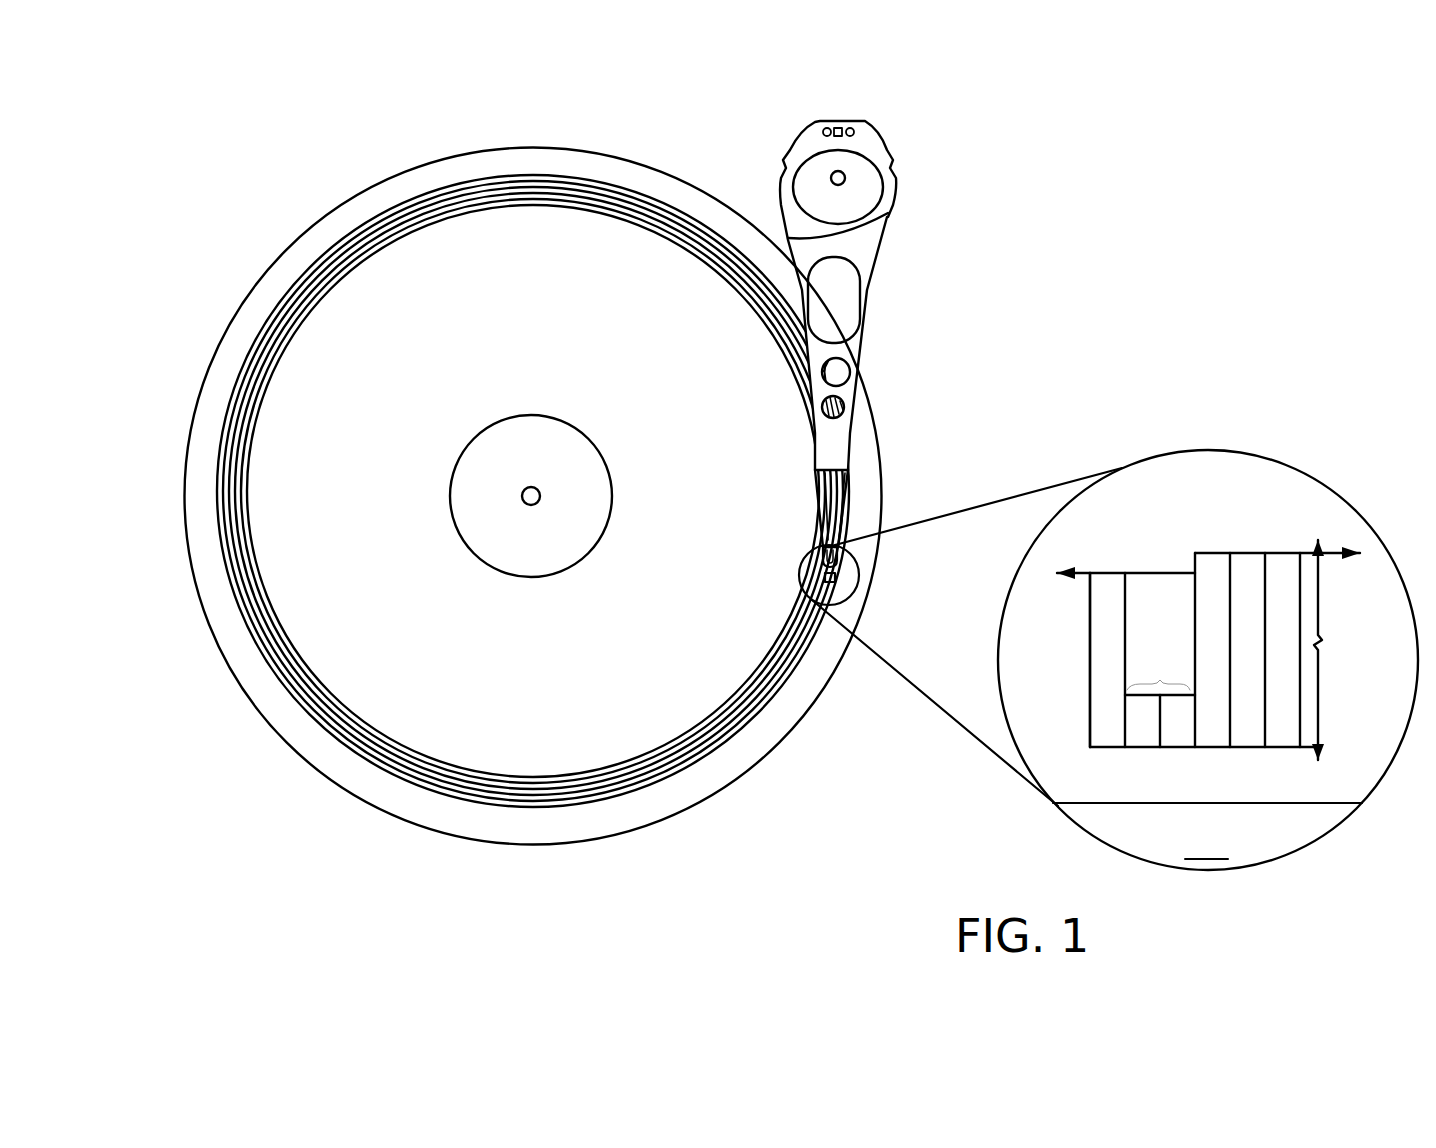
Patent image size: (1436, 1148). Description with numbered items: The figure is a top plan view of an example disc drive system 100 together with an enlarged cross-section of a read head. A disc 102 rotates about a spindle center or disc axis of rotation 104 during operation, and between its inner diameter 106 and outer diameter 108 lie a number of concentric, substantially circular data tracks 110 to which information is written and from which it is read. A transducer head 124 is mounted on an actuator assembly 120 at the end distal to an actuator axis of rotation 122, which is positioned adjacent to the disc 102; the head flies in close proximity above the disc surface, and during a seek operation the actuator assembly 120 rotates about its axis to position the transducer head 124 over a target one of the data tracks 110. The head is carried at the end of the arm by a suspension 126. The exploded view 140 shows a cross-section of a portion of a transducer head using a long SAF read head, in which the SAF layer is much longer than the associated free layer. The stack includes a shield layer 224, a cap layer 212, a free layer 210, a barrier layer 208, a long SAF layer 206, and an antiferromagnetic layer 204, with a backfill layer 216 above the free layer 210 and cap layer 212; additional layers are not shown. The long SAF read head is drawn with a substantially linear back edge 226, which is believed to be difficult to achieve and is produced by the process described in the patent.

The disc drive system 100 is at (260, 122).
The disc 102 is at (607, 150).
The disc axis of rotation 104 is at (531, 496).
The inner diameter 106 is at (495, 420).
The outer diameter 108 is at (400, 197).
The data tracks 110 is at (260, 656).
The actuator assembly 120 is at (888, 255).
The actuator axis of rotation 122 is at (845, 176).
The transducer head 124 is at (843, 567).
The suspension 126 is at (822, 498).
The exploded view 140 is at (1295, 852).
The antiferromagnetic layer 204 is at (1292, 597).
The long SAF layer 206 is at (1247, 570).
The barrier layer 208 is at (1211, 560).
The free layer 210 is at (1177, 729).
The cap layer 212 is at (1143, 718).
The backfill layer 216 is at (1142, 582).
The shield layer 224 is at (1098, 617).
The substantially linear back edge 226 is at (1158, 678).